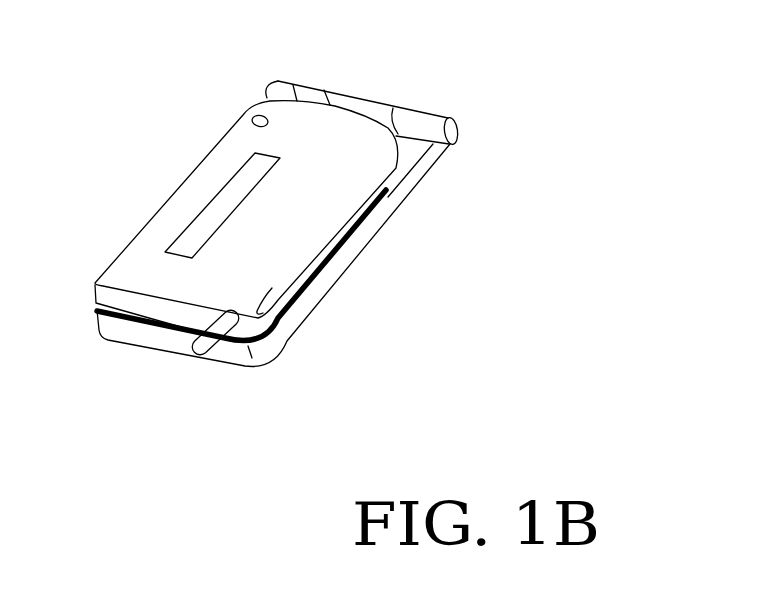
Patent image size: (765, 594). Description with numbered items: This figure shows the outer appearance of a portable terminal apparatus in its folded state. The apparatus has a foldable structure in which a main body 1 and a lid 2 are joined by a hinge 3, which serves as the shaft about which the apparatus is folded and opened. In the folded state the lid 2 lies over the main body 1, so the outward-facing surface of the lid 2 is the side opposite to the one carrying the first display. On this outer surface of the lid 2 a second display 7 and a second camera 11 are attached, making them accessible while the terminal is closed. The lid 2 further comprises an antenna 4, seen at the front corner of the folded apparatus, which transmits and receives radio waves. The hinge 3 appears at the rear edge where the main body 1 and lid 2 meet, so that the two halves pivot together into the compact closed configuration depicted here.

The main body 1 is at (411, 179).
The lid 2 is at (360, 213).
The hinge 3 is at (457, 131).
The antenna 4 is at (214, 344).
The second display 7 is at (209, 233).
The second camera 11 is at (247, 118).